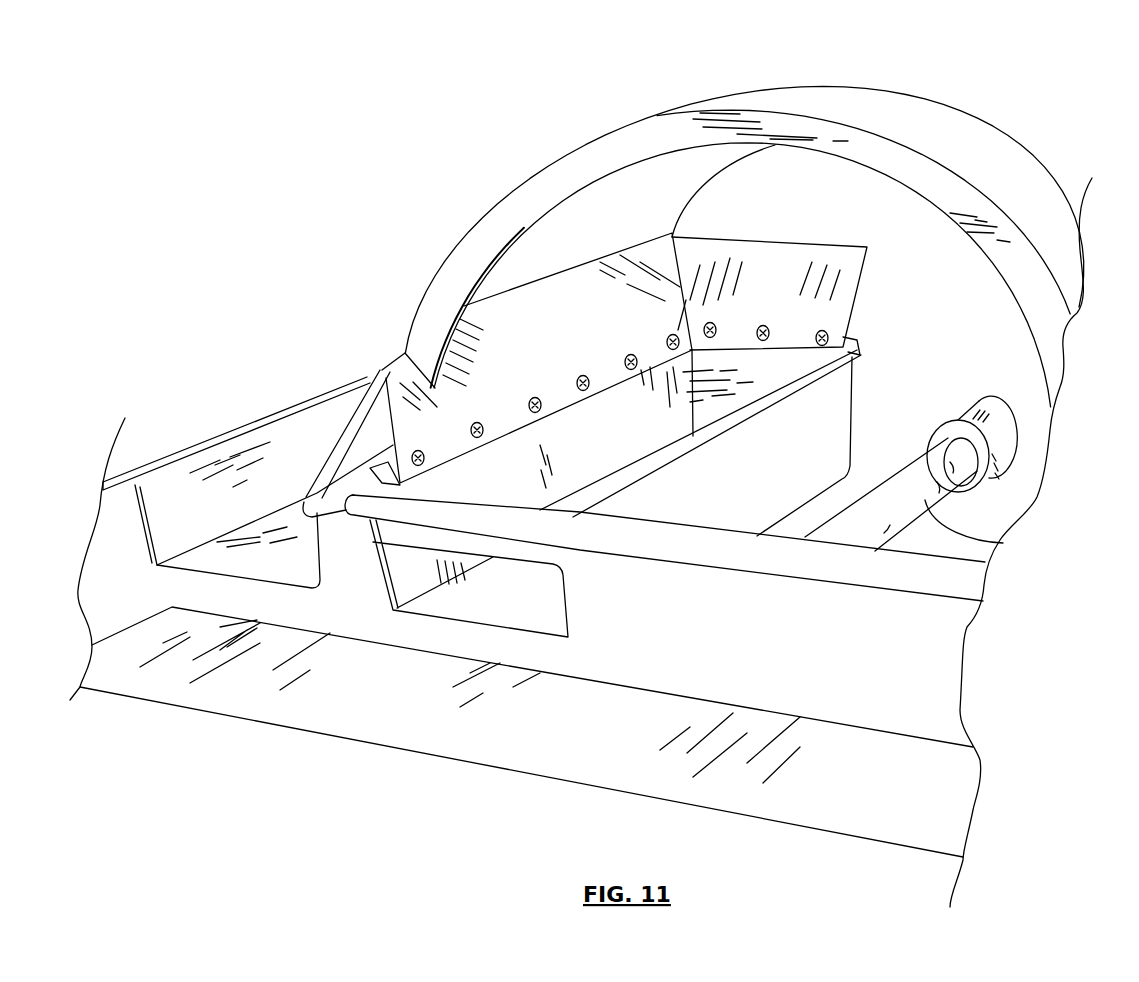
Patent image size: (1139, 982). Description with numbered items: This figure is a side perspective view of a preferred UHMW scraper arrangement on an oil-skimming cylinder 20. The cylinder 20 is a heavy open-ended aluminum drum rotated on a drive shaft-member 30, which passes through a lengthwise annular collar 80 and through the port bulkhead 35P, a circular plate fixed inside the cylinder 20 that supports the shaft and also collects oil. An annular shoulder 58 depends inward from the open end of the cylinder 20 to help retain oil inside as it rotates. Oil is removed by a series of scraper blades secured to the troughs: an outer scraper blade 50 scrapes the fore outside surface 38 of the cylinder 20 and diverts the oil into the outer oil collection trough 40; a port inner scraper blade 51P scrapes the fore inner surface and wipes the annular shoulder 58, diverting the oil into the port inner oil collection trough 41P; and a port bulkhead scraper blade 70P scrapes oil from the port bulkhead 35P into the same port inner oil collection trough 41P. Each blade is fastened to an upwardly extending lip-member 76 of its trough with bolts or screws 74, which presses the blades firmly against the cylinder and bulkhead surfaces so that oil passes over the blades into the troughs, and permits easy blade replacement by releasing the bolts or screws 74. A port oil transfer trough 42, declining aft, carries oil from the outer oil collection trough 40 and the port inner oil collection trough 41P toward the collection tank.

The cylinder 20 is at (606, 128).
The drive shaft-member 30 is at (1003, 543).
The port bulkhead 35P is at (1020, 375).
The outside surface 38 is at (950, 123).
The outer oil collection trough 40 is at (297, 437).
The port inner oil collection trough 41P is at (697, 494).
The port oil transfer trough 42 is at (315, 712).
The outer scraper blade 50 is at (375, 372).
The port inner scraper blade 51P is at (551, 292).
The annular shoulder 58 is at (662, 137).
The port bulkhead scraper blade 70P is at (780, 260).
The bolts or screws 74 is at (477, 424).
The lip-member 76 is at (405, 483).
The annular collar 80 is at (983, 465).